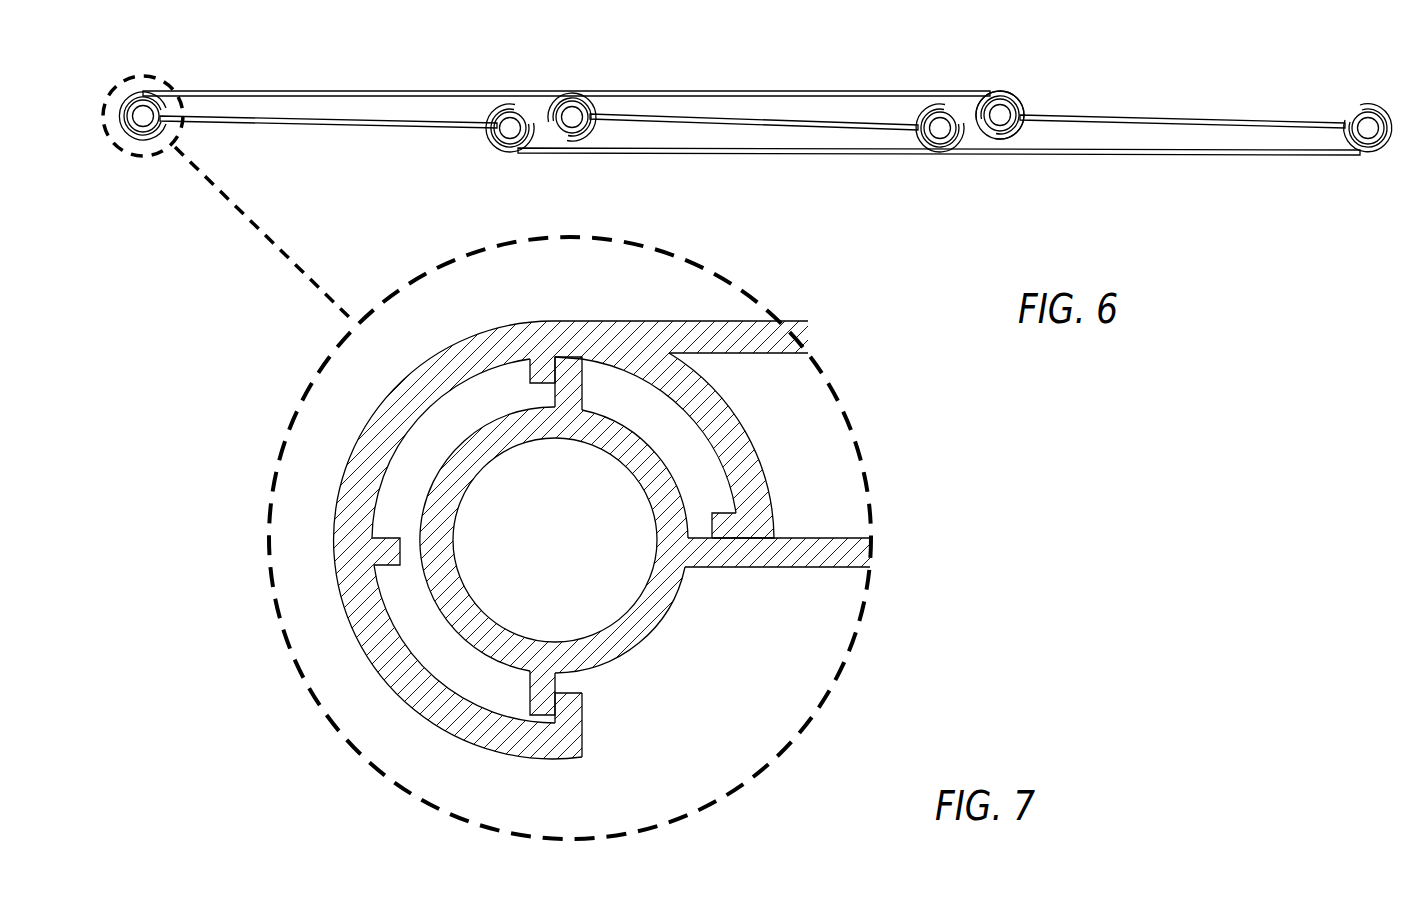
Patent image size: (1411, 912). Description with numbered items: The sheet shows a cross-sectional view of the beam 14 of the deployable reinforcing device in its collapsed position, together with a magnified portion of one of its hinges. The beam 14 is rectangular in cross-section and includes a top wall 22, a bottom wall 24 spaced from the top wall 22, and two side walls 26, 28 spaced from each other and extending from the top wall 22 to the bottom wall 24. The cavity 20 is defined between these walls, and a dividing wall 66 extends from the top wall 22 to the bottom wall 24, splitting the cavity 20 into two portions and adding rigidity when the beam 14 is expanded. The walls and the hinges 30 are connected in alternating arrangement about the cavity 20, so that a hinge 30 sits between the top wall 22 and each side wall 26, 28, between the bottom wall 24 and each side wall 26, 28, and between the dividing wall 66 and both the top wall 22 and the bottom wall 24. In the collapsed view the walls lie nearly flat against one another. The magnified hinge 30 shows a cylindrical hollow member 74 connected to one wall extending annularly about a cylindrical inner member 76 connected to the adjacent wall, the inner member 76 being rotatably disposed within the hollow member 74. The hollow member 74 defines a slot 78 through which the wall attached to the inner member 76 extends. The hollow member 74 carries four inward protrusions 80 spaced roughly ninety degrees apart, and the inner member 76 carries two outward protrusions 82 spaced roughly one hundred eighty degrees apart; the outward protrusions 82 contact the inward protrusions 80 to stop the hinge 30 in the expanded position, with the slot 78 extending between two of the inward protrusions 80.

In FIG. 6, the beam 14 is at (774, 52).
In FIG. 6, the cavity 20 is at (728, 133).
In FIG. 6, the top wall 22 is at (640, 90).
In FIG. 7, the top wall 22 is at (723, 332).
In FIG. 6, the bottom wall 24 is at (993, 154).
In FIG. 6, the side wall 26 is at (363, 123).
In FIG. 7, the side wall 26 is at (804, 560).
In FIG. 6, the side wall 28 is at (1105, 118).
In FIG. 6, the hinge 30 is at (160, 152).
In FIG. 7, the hinge 30 is at (702, 666).
In FIG. 6, the dividing wall 66 is at (817, 120).
In FIG. 7, the hollow member 74 is at (400, 674).
In FIG. 7, the inner member 76 is at (450, 492).
In FIG. 7, the slot 78 is at (612, 693).
In FIG. 7, the inward protrusion 80 is at (543, 370).
In FIG. 7, the outward protrusion 82 is at (573, 380).